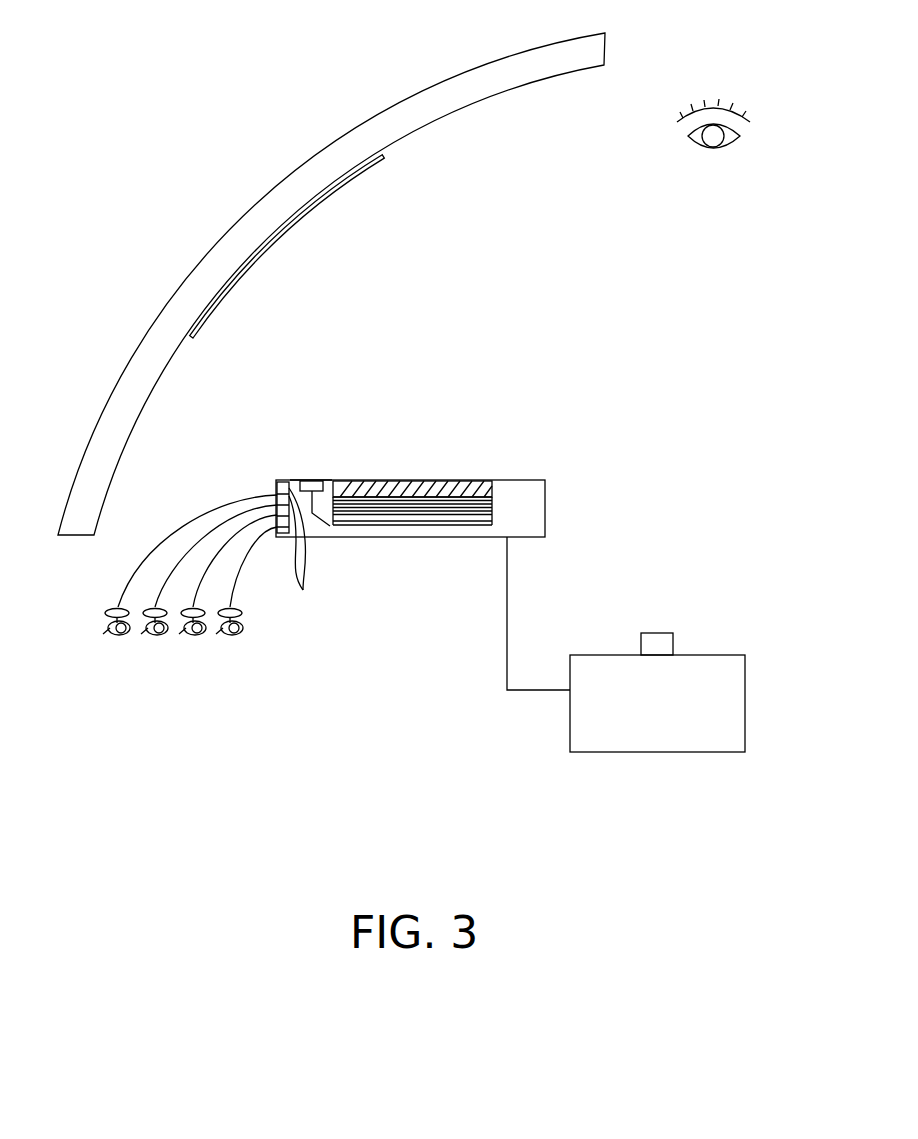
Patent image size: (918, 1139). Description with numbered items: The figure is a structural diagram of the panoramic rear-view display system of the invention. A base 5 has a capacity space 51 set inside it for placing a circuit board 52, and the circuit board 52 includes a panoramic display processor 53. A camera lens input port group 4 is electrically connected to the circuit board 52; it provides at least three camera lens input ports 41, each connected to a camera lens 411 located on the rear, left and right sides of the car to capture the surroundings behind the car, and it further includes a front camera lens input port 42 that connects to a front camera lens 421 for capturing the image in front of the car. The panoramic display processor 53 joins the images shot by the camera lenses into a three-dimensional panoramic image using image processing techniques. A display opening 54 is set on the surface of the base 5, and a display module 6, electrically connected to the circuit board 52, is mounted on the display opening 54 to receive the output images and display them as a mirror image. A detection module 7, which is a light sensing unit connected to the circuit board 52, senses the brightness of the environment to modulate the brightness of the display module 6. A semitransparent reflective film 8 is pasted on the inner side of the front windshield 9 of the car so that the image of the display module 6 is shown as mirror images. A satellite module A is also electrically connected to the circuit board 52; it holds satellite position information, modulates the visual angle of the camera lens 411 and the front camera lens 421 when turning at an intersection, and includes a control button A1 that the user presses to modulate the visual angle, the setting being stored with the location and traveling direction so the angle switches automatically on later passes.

The front windshield 9 is at (340, 137).
The semitransparent reflective film 8 is at (242, 280).
The base 5 is at (545, 512).
The front camera lens input port 42 is at (292, 481).
The camera lens input port group 4 is at (302, 480).
The detection module 7 is at (313, 480).
The display module 6 is at (472, 480).
The display opening 54 is at (395, 480).
The panoramic display processor 53 is at (378, 516).
The circuit board 52 is at (438, 526).
The capacity space 51 is at (493, 516).
The camera lens input ports 41 is at (304, 558).
The front camera lens 421 is at (115, 637).
The camera lens 411 is at (157, 637).
The satellite module A is at (722, 655).
The control button A1 is at (660, 633).